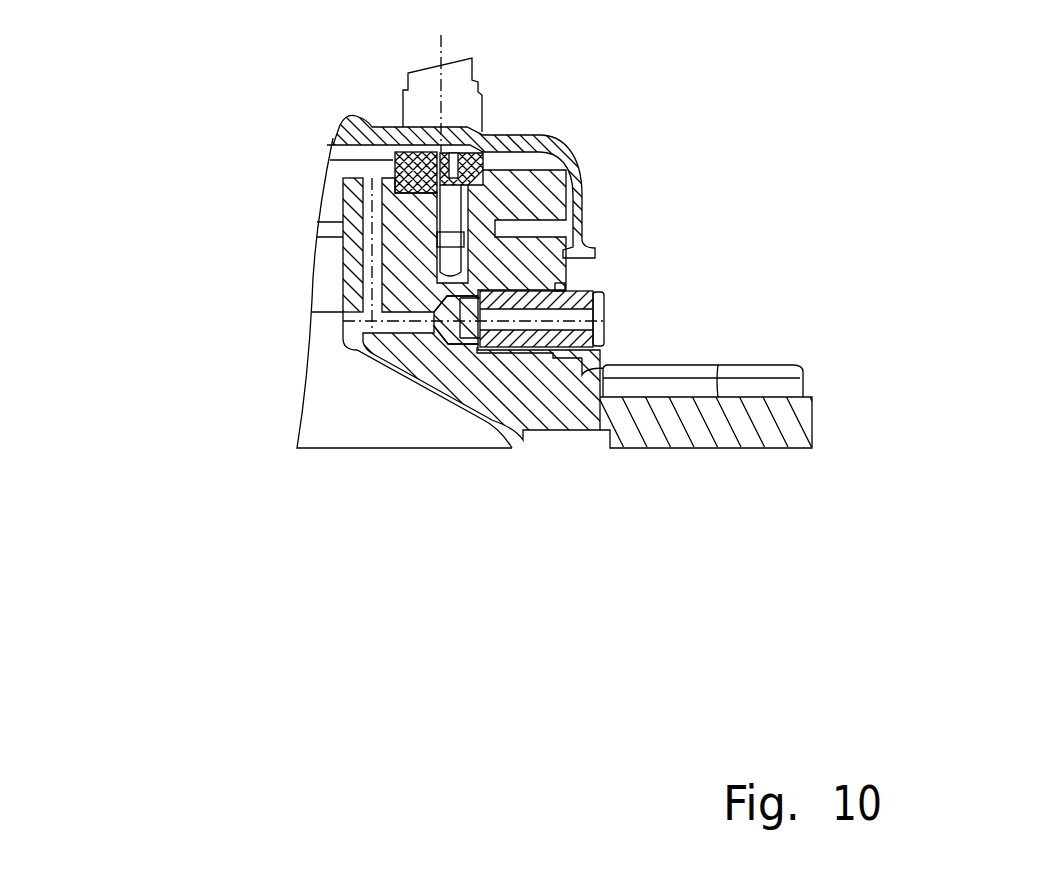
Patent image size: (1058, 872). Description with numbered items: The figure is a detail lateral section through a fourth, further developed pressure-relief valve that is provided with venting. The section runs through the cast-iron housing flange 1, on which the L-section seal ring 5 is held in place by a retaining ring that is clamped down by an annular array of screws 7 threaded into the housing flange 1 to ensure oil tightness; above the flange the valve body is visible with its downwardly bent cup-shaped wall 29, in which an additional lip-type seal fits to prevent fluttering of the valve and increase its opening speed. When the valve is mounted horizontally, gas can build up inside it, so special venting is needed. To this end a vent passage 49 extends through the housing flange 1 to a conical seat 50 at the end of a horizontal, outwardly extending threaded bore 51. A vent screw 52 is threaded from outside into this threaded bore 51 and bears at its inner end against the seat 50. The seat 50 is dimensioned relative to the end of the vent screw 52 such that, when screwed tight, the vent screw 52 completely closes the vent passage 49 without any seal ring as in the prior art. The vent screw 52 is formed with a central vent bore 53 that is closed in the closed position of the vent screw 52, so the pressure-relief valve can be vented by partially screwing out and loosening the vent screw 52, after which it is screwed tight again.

The housing flange 1 is at (538, 203).
The L-section seal ring 5 is at (393, 160).
The screws 7 is at (455, 198).
The cup-shaped wall 29 is at (476, 293).
The vent passage 49 is at (367, 242).
The seat 50 is at (443, 343).
The threaded bore 51 is at (478, 362).
The vent screw 52 is at (603, 292).
The central vent bore 53 is at (607, 312).